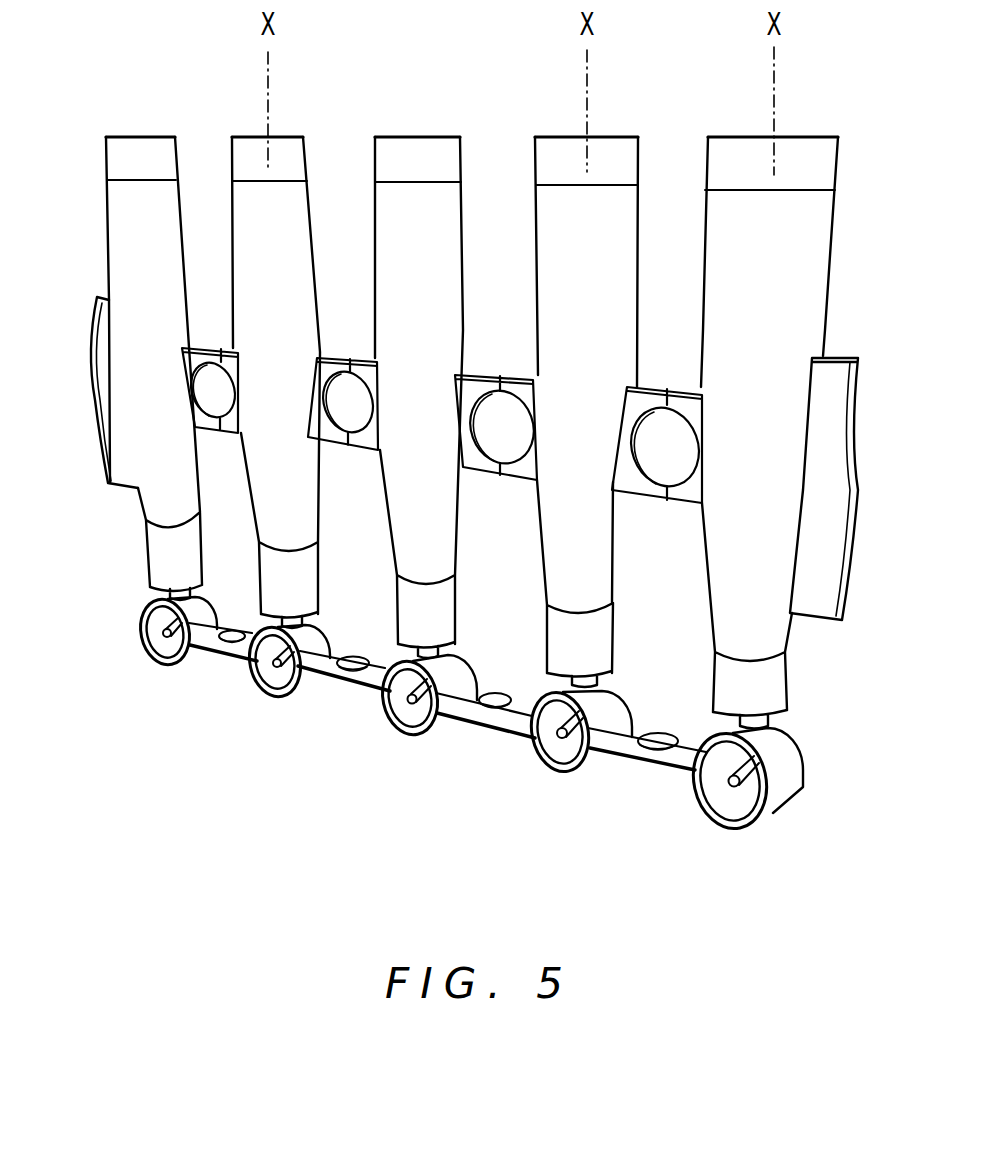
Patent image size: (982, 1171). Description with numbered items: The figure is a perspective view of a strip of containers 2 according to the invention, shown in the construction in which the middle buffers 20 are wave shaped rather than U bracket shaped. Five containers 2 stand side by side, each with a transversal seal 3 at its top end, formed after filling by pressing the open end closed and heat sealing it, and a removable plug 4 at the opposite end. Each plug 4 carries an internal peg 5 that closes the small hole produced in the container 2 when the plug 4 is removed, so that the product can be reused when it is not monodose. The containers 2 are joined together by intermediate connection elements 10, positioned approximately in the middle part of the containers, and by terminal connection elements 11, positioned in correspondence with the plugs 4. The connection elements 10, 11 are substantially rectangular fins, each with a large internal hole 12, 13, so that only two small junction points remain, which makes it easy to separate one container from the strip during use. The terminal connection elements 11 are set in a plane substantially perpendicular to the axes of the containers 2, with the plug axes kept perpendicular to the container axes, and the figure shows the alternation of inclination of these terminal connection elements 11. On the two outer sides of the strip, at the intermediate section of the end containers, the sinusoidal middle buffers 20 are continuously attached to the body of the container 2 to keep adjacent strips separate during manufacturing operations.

The container 2 is at (808, 262).
The transversal seal 3 is at (143, 152).
The removable plug 4 is at (167, 648).
The internal peg 5 is at (417, 705).
The intermediate connection element 10 is at (475, 388).
The terminal connection element 11 is at (622, 735).
The internal hole 12 is at (658, 467).
The internal hole 13 is at (230, 643).
The middle buffer element 20 is at (105, 378).